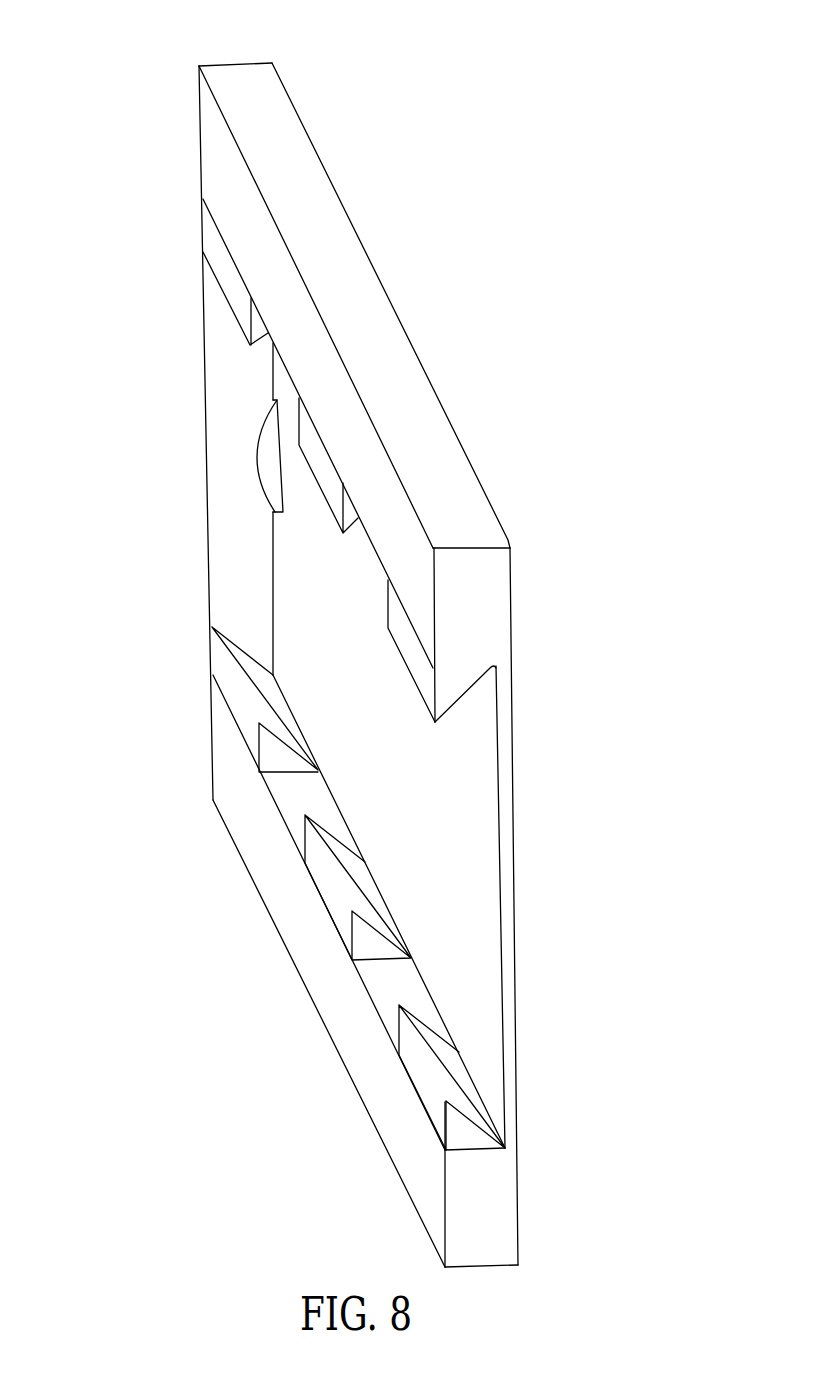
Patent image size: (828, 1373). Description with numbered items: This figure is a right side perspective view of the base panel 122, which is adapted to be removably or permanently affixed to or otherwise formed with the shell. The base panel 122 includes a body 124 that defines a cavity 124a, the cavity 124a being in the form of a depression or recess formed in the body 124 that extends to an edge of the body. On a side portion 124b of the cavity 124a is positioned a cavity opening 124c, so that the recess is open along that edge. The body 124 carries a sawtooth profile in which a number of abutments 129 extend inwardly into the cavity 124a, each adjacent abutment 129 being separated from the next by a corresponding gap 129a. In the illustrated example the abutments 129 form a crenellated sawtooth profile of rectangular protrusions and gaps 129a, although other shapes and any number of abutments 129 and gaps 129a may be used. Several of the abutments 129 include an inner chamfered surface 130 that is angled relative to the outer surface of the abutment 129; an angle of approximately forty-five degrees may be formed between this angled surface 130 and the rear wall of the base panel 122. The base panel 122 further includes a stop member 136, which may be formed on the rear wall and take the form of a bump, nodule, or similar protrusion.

The base panel 122 is at (235, 63).
The body 124 is at (273, 118).
The cavity 124a is at (480, 910).
The side portion 124b is at (528, 617).
The cavity opening 124c is at (512, 1052).
The abutment 129 is at (222, 252).
The gap 129a is at (360, 562).
The inner chamfered surface 130 is at (276, 712).
The stop member 136 is at (263, 445).